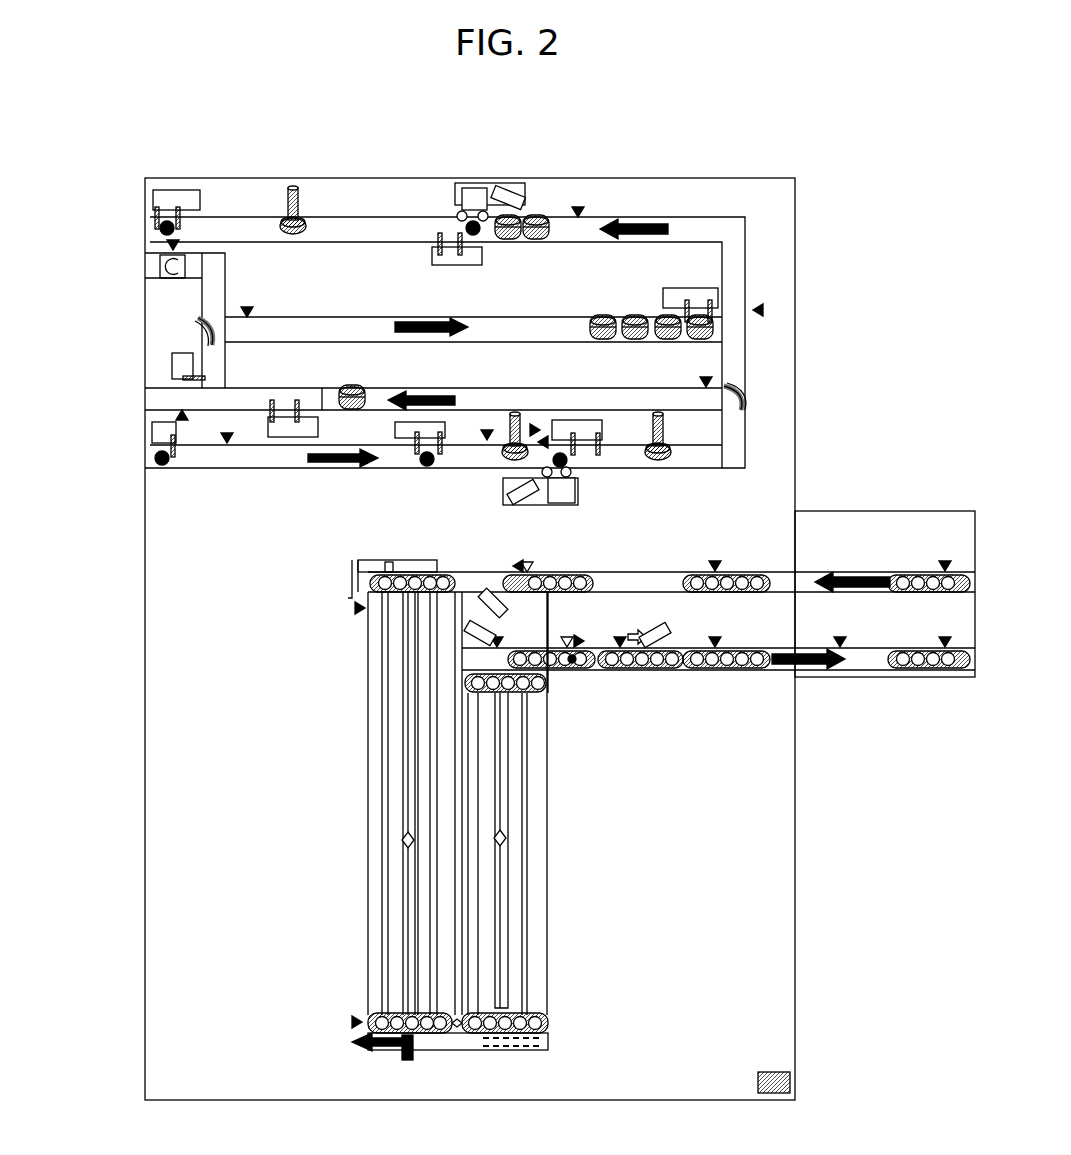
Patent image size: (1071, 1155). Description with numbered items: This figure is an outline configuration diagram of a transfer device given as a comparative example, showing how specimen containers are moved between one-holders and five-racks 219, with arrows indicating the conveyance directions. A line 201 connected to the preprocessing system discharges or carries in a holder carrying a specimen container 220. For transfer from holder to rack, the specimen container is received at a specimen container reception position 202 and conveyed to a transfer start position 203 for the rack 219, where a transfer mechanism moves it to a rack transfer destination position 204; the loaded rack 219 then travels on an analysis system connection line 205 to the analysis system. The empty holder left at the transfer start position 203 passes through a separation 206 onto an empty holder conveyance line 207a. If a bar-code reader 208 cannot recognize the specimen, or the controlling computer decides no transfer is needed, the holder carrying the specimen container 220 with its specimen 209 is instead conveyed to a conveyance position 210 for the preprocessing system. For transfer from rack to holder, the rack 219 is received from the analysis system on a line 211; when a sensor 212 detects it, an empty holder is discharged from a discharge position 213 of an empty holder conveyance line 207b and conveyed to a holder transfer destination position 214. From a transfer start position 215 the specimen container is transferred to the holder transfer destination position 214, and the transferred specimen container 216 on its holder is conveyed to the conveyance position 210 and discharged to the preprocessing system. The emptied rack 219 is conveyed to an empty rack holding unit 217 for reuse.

The line 201 is at (298, 458).
The specimen container reception position 202 is at (155, 460).
The transfer start position 203 is at (578, 480).
The rack transfer destination position 204 is at (585, 672).
The analysis system connection line 205 is at (858, 660).
The separation 206 is at (735, 390).
The empty holder conveyance line 207a is at (537, 403).
The empty holder conveyance line 207b is at (460, 325).
The bar-code reader 208 is at (350, 385).
The specimen 209 is at (660, 430).
The conveyance position 210 is at (152, 218).
The line 211 is at (778, 575).
The sensor 212 is at (716, 572).
The discharge position 213 is at (720, 300).
The holder transfer destination position 214 is at (458, 216).
The transfer start position 215 is at (526, 572).
The transferred specimen container 216 is at (290, 205).
The empty rack holding unit 217 is at (407, 735).
The five-rack 219 is at (710, 592).
The specimen container 220 is at (508, 430).